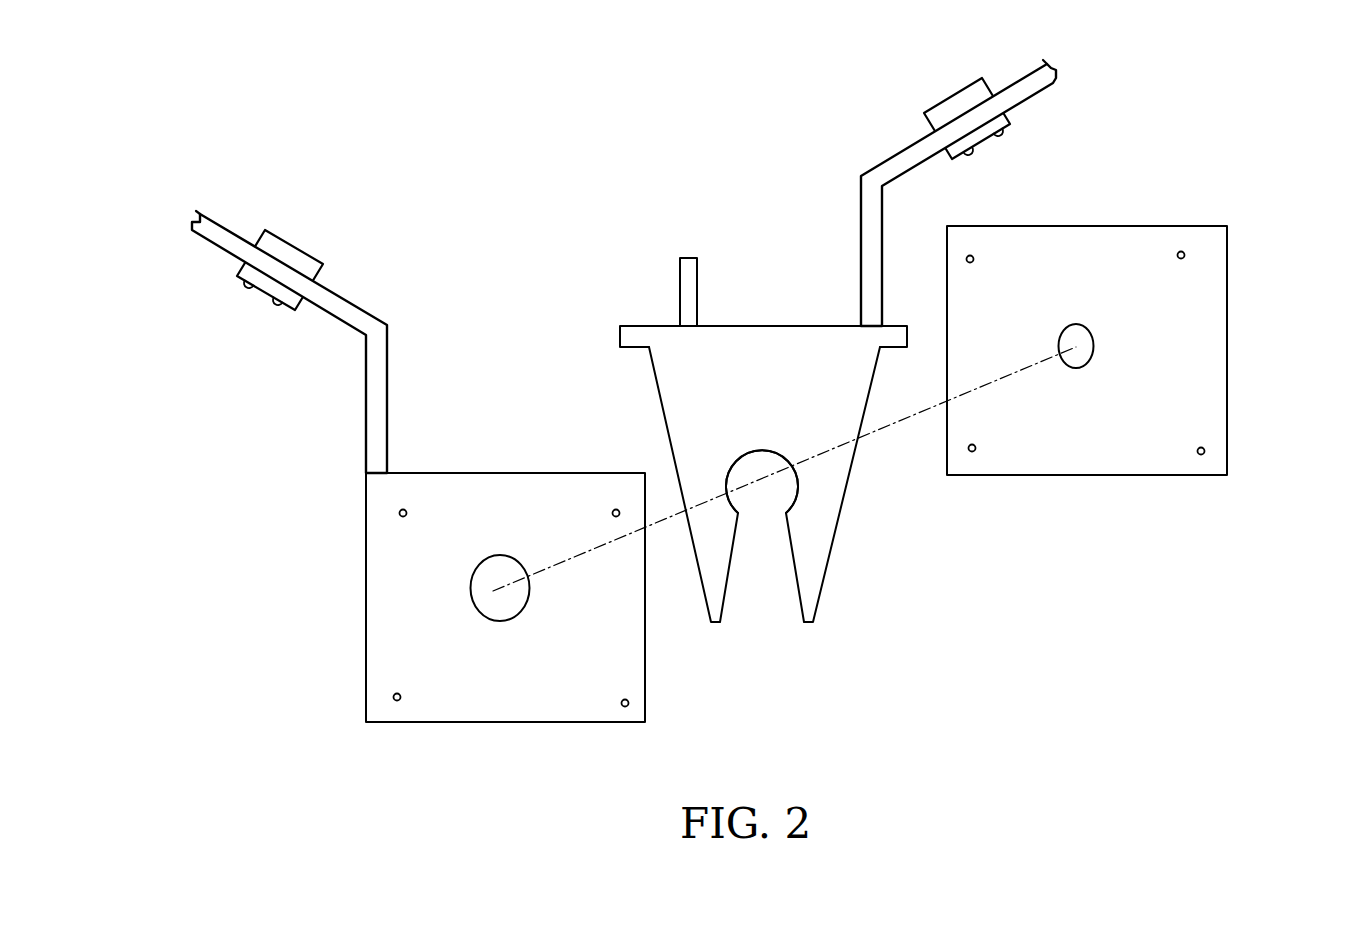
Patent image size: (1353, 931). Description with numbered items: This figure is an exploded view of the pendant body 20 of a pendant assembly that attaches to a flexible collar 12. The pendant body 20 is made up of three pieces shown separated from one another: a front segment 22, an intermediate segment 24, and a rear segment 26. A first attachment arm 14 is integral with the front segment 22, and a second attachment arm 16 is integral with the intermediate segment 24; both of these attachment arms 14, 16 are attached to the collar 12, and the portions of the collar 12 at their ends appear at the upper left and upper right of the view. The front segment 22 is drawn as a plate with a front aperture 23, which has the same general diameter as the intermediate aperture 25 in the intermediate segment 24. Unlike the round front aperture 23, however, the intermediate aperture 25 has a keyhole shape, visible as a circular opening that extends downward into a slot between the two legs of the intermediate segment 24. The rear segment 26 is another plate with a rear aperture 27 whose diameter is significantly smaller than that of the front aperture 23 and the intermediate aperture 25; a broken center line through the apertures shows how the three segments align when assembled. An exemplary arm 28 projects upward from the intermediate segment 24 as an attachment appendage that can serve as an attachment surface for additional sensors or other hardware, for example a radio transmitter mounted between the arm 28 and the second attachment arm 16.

The collar 12 is at (220, 250).
The first attachment arm 14 is at (363, 353).
The second attachment arm 16 is at (919, 122).
The pendant body 20 is at (398, 178).
The front segment 22 is at (366, 598).
The front aperture 23 is at (530, 590).
The intermediate segment 24 is at (813, 607).
The intermediate aperture 25 is at (797, 486).
The rear segment 26 is at (1087, 475).
The rear aperture 27 is at (1095, 349).
The arm 28 is at (678, 290).